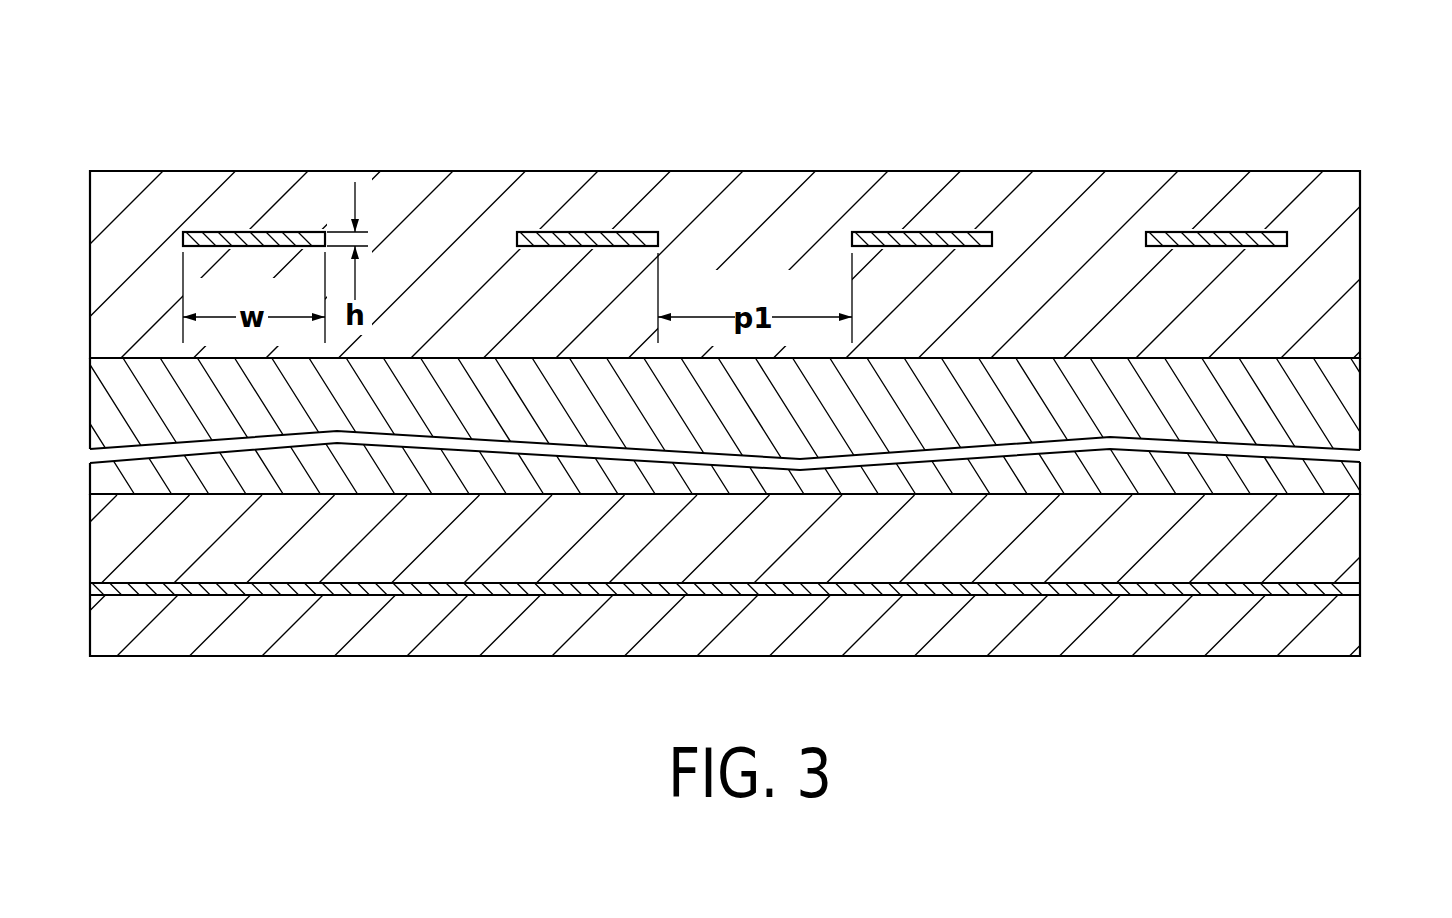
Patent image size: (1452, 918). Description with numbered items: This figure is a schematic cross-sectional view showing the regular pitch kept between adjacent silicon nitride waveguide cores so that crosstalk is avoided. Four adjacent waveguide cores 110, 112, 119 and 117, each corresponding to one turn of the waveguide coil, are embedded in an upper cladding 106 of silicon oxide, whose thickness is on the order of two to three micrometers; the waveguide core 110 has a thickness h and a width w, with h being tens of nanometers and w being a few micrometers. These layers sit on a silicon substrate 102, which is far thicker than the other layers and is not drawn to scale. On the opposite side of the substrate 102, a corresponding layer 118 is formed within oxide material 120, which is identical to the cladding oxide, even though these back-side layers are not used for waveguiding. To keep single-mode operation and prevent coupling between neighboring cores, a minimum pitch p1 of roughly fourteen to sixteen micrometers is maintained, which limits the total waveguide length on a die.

The upper cladding 106 is at (1370, 171).
The substrate 102 is at (1350, 421).
The material 120 is at (1370, 495).
The layer 118 is at (1163, 592).
The waveguide core 110 is at (278, 232).
The waveguide core 112 is at (613, 232).
The waveguide core 119 is at (928, 232).
The waveguide core 117 is at (1220, 232).